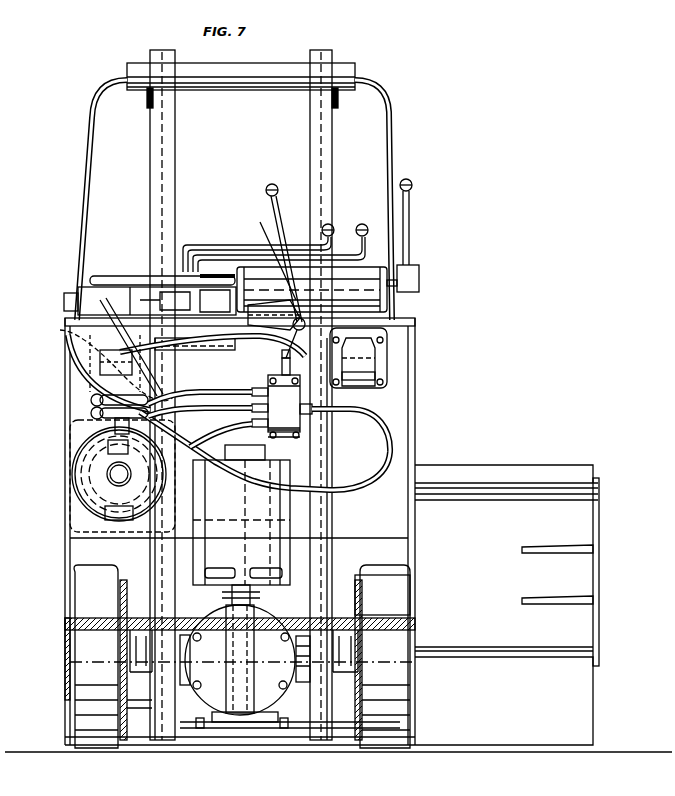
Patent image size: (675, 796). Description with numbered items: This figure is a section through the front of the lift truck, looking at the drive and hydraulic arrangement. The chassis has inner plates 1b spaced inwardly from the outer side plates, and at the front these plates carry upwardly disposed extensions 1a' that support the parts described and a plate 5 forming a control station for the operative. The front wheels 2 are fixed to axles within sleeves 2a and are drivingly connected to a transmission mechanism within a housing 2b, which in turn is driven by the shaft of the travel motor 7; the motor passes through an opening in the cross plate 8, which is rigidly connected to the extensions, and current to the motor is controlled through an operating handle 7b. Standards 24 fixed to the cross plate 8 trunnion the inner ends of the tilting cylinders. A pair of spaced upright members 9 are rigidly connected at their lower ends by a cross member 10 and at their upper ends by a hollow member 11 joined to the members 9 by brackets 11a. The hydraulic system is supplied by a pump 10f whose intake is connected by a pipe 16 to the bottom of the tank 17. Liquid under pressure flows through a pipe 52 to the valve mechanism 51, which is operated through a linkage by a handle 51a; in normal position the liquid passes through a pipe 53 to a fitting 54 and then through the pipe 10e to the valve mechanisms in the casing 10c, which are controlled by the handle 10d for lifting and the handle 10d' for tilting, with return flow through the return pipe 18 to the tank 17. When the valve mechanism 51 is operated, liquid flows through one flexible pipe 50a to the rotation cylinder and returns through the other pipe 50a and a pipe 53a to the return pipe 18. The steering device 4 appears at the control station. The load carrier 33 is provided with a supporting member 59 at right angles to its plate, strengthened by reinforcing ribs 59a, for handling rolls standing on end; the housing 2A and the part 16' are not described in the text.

The upwardly disposed extension 1a' is at (235, 531).
The inner plate 1b is at (155, 712).
The front wheel 2 is at (82, 740).
The sleeve 2a is at (356, 662).
The transmission housing 2b is at (212, 696).
The housing 2A is at (388, 337).
The steering device 4 is at (127, 277).
The plate 5 is at (377, 622).
The motor 7 is at (195, 561).
The operating handle 7b is at (409, 210).
The cross plate 8 is at (400, 469).
The upright member 9 is at (160, 178).
The cross member 10 is at (223, 746).
The valve casing 10c is at (64, 324).
The operating handle 10d is at (350, 216).
The handle 10d' is at (276, 254).
The pipe 10e is at (62, 400).
The pump 10f is at (87, 497).
The hollow member 11 is at (252, 72).
The bracket 11a is at (150, 94).
The pipe 16 is at (125, 549).
The housing 16' is at (345, 456).
The tank 17 is at (305, 432).
The return pipe 18 is at (115, 363).
The standard 24 is at (100, 384).
The load carrier 33 is at (590, 716).
The flexible pipe 50a is at (394, 142).
The valve mechanism 51 is at (282, 376).
The handle 51a is at (270, 225).
The pipe 52 is at (197, 407).
The pipe 53 is at (371, 484).
The pipe 53a is at (240, 361).
The fitting 54 is at (100, 409).
The supporting member 59 is at (600, 579).
The reinforcing rib 59a is at (543, 598).